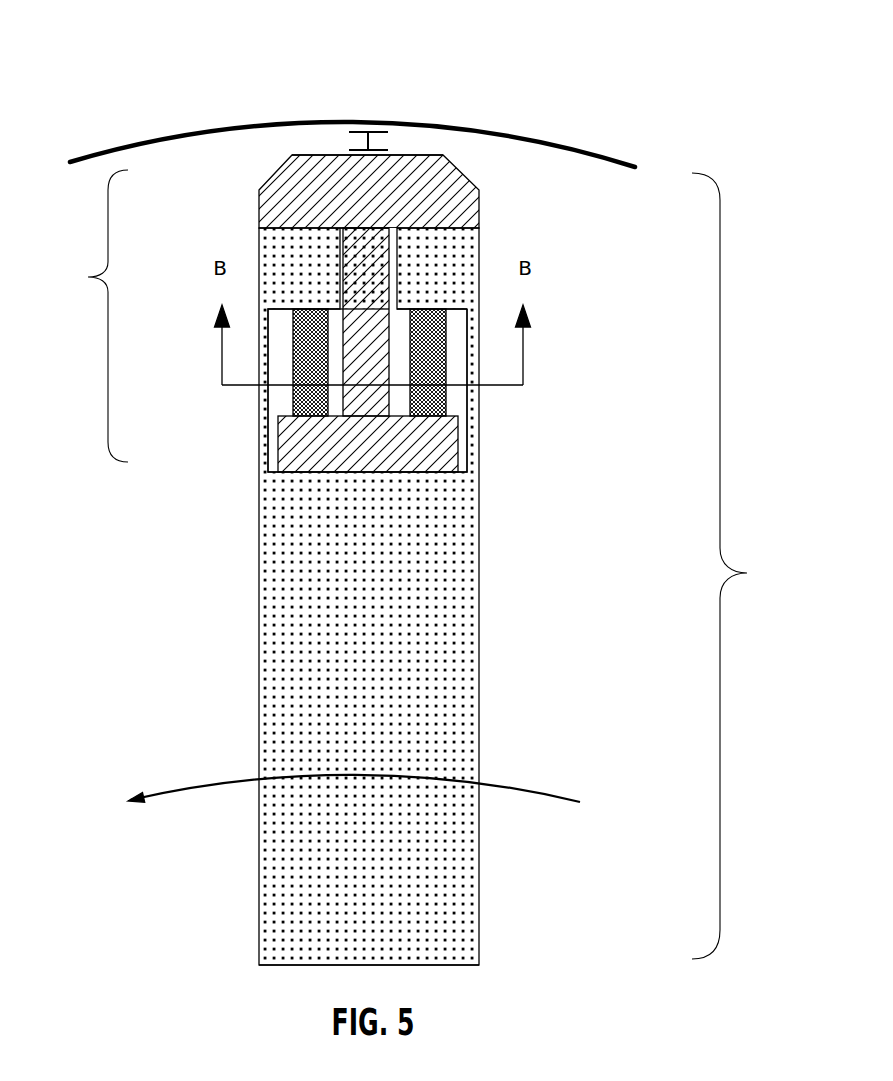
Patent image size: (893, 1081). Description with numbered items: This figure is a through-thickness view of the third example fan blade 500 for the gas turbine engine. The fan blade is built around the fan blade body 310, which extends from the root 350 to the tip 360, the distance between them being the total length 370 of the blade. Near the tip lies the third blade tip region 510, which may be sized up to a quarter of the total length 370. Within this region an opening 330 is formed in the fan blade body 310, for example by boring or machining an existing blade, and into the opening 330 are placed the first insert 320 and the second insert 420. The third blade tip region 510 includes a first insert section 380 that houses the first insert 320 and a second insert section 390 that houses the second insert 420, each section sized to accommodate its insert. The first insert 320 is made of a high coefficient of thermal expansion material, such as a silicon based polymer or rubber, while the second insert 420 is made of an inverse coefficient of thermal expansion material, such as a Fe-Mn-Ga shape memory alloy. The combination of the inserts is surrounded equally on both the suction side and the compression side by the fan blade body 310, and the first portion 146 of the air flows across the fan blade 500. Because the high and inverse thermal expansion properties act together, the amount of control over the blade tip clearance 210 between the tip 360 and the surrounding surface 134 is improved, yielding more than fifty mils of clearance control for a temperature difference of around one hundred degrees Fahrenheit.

The display cover surface 134 is at (557, 143).
The first portion of the air 146 is at (510, 787).
The blade tip clearance 210 is at (348, 142).
The fan blade body 310 is at (415, 590).
The first insert 320 is at (428, 382).
The opening 330 is at (400, 316).
The root 350 is at (373, 965).
The tip 360 is at (433, 155).
The total length 370 is at (742, 566).
The first insert section 380 is at (293, 357).
The second insert section 390 is at (343, 273).
The second insert 420 is at (440, 198).
The third example fan blade 500 is at (530, 55).
The third blade tip region 510 is at (78, 316).